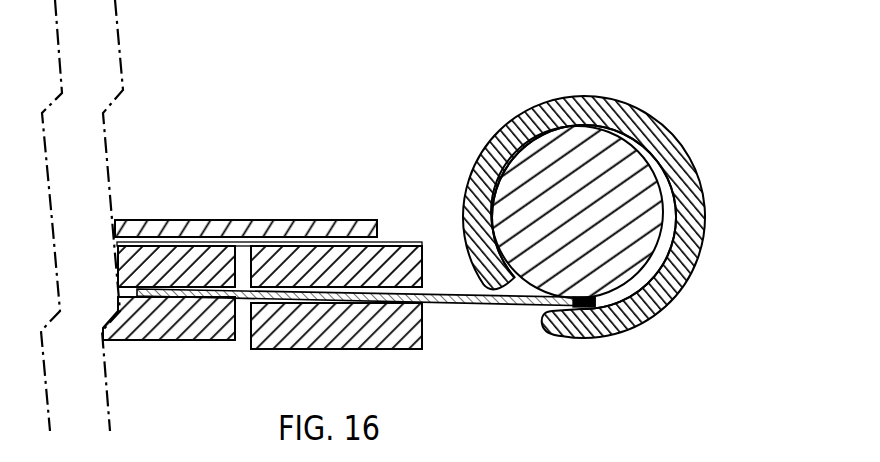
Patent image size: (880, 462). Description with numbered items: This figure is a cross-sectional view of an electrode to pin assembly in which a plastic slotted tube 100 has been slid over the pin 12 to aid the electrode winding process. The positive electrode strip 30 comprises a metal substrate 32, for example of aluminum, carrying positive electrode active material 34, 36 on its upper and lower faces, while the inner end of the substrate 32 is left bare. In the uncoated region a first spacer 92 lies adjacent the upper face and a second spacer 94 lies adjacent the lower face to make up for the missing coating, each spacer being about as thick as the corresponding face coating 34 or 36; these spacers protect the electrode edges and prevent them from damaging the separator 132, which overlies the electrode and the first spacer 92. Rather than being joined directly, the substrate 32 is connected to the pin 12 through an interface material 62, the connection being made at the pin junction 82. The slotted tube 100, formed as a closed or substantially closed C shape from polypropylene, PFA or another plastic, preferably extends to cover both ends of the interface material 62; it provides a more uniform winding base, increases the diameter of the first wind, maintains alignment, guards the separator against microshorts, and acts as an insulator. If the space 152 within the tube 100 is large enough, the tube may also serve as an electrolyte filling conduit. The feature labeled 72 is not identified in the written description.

The pin 12 is at (593, 183).
The positive electrode strip 30 is at (202, 368).
The metal substrate 32 is at (200, 290).
The positive electrode active material (first face coating) 34 is at (122, 246).
The positive electrode active material (second face coating) 36 is at (128, 341).
The interface material 62 is at (482, 307).
The passage 72 is at (300, 297).
The pin junction 82 is at (585, 310).
The first spacer 92 is at (326, 267).
The second spacer 94 is at (387, 349).
The plastic slotted tube 100 is at (677, 163).
The separator 132 is at (176, 224).
The space 152 is at (668, 217).